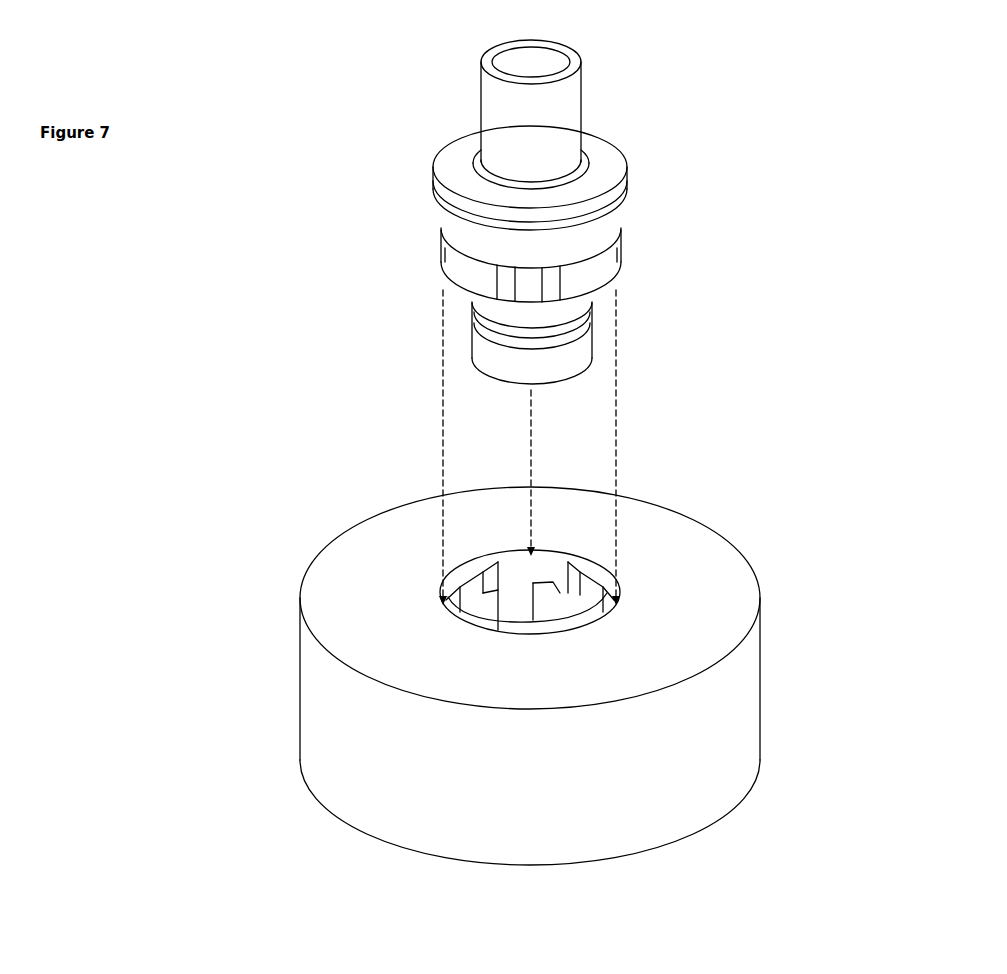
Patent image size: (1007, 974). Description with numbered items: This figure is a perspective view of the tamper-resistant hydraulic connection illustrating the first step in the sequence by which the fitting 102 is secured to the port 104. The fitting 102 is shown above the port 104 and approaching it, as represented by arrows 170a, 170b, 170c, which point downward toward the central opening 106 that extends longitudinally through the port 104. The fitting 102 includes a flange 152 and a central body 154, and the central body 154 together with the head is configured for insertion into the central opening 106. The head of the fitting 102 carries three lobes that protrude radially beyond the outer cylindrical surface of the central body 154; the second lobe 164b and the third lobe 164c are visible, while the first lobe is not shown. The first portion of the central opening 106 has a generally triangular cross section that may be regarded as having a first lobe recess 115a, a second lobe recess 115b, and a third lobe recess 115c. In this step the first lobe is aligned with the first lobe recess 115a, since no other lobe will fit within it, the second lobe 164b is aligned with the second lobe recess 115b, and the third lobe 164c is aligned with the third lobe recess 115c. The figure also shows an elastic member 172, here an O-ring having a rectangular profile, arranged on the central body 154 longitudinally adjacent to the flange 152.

The fitting 102 is at (688, 168).
The flange 152 is at (447, 152).
The elastic member 172 is at (438, 216).
The central body 154 is at (535, 262).
The second lobe 164b is at (447, 273).
The third lobe 164c is at (600, 285).
The arrow 170a is at (531, 437).
The arrow 170b is at (443, 397).
The arrow 170c is at (614, 384).
The port 104 is at (238, 668).
The central opening 106 is at (553, 640).
The first lobe recess 115a is at (528, 553).
The second lobe recess 115b is at (443, 604).
The third lobe recess 115c is at (615, 605).